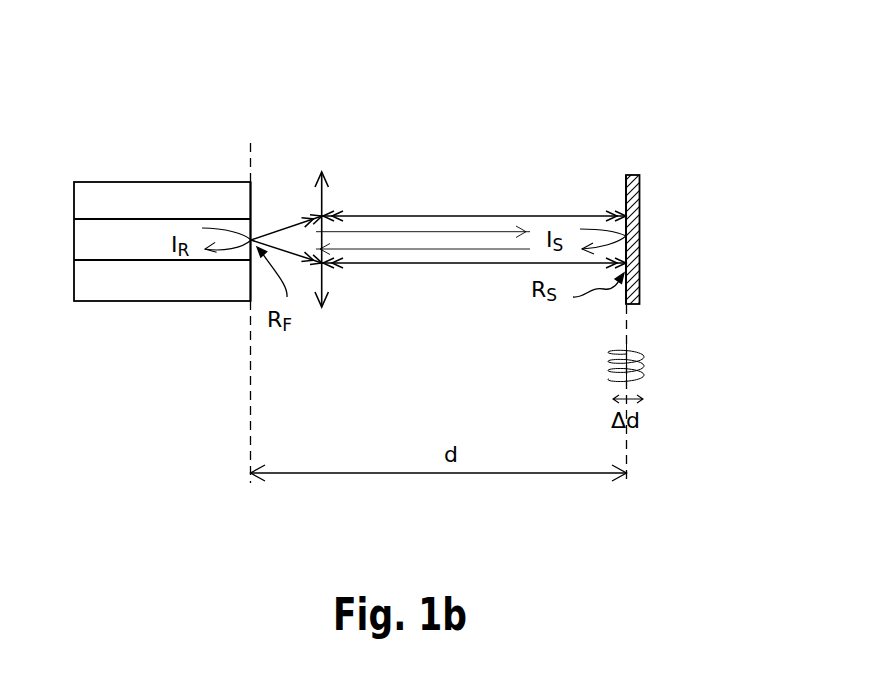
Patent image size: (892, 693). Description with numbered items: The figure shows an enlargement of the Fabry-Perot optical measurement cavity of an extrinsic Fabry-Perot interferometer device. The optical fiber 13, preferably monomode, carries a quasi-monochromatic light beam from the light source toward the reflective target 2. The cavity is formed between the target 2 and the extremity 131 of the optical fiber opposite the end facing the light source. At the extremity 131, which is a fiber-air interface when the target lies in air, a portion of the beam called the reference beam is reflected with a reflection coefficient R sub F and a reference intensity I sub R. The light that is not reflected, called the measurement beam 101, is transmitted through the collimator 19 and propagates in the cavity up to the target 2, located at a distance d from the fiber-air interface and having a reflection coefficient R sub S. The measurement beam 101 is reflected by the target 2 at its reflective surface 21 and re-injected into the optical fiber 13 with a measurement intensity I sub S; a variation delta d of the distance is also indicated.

The optical fiber 13 is at (143, 200).
The extremity of the optical fiber 131 is at (252, 195).
The collimator 19 is at (347, 188).
The measurement beam 101 is at (455, 215).
The reflective surface 21 is at (626, 192).
The reflective target 2 is at (656, 181).